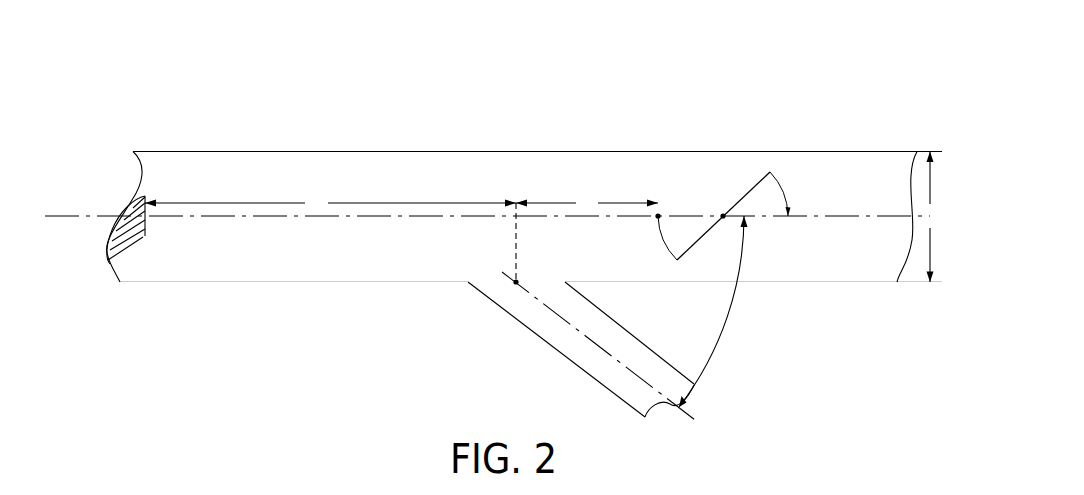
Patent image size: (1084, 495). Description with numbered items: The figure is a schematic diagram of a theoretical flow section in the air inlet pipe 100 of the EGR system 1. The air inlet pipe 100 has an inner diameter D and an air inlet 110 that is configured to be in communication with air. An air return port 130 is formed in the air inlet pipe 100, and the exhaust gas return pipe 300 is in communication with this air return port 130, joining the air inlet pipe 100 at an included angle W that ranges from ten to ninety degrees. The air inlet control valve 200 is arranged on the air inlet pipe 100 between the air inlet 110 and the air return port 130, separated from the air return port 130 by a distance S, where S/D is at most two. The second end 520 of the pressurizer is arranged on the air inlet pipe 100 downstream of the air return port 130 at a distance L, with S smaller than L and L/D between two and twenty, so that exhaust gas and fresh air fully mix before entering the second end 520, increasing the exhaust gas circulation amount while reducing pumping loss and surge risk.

The EGR system 1 is at (524, 75).
The air inlet pipe 100 is at (457, 167).
The air inlet 110 is at (875, 160).
The air return port 130 is at (488, 282).
The air inlet control valve 200 is at (737, 202).
The exhaust gas return pipe 300 is at (575, 348).
The second end 520 is at (132, 202).